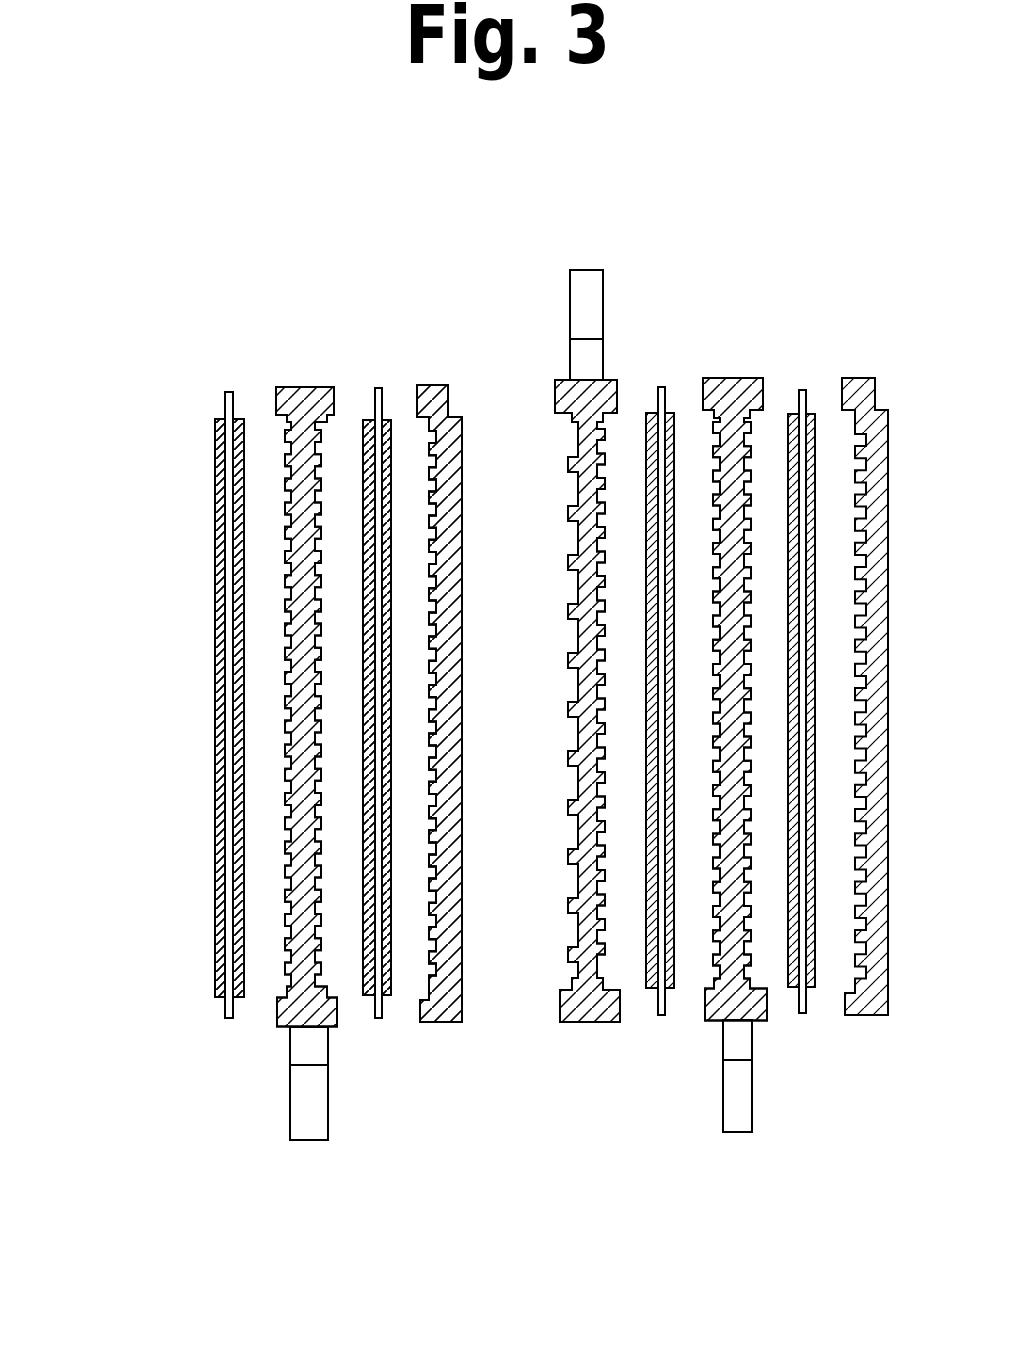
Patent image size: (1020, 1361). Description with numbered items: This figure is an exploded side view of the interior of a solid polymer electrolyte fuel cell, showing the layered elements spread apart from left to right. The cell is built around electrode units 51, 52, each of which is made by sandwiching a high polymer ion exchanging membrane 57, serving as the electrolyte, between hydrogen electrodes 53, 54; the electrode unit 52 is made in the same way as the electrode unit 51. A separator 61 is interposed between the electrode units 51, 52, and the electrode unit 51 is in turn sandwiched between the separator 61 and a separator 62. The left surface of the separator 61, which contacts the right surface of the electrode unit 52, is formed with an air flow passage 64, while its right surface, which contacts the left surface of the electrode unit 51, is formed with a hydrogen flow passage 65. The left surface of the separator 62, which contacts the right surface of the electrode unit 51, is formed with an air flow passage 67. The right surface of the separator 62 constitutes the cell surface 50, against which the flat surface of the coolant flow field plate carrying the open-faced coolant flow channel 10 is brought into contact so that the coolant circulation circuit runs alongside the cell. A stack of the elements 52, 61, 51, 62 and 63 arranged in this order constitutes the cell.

The open-faced coolant flow channel 10 is at (557, 952).
The cell surface 50 is at (463, 678).
The electrode unit 51 is at (379, 1020).
The electrode unit 52 is at (215, 918).
The hydrogen electrode 53 is at (175, 432).
The hydrogen electrode 54 is at (251, 497).
The high polymer ion exchanging membrane 57 is at (378, 384).
The separator 61 is at (303, 385).
The separator 62 is at (446, 386).
The stack element 63 is at (590, 1048).
The air flow passage 64 is at (271, 922).
The hydrogen flow passage 65 is at (333, 950).
The air flow passage 67 is at (421, 1000).